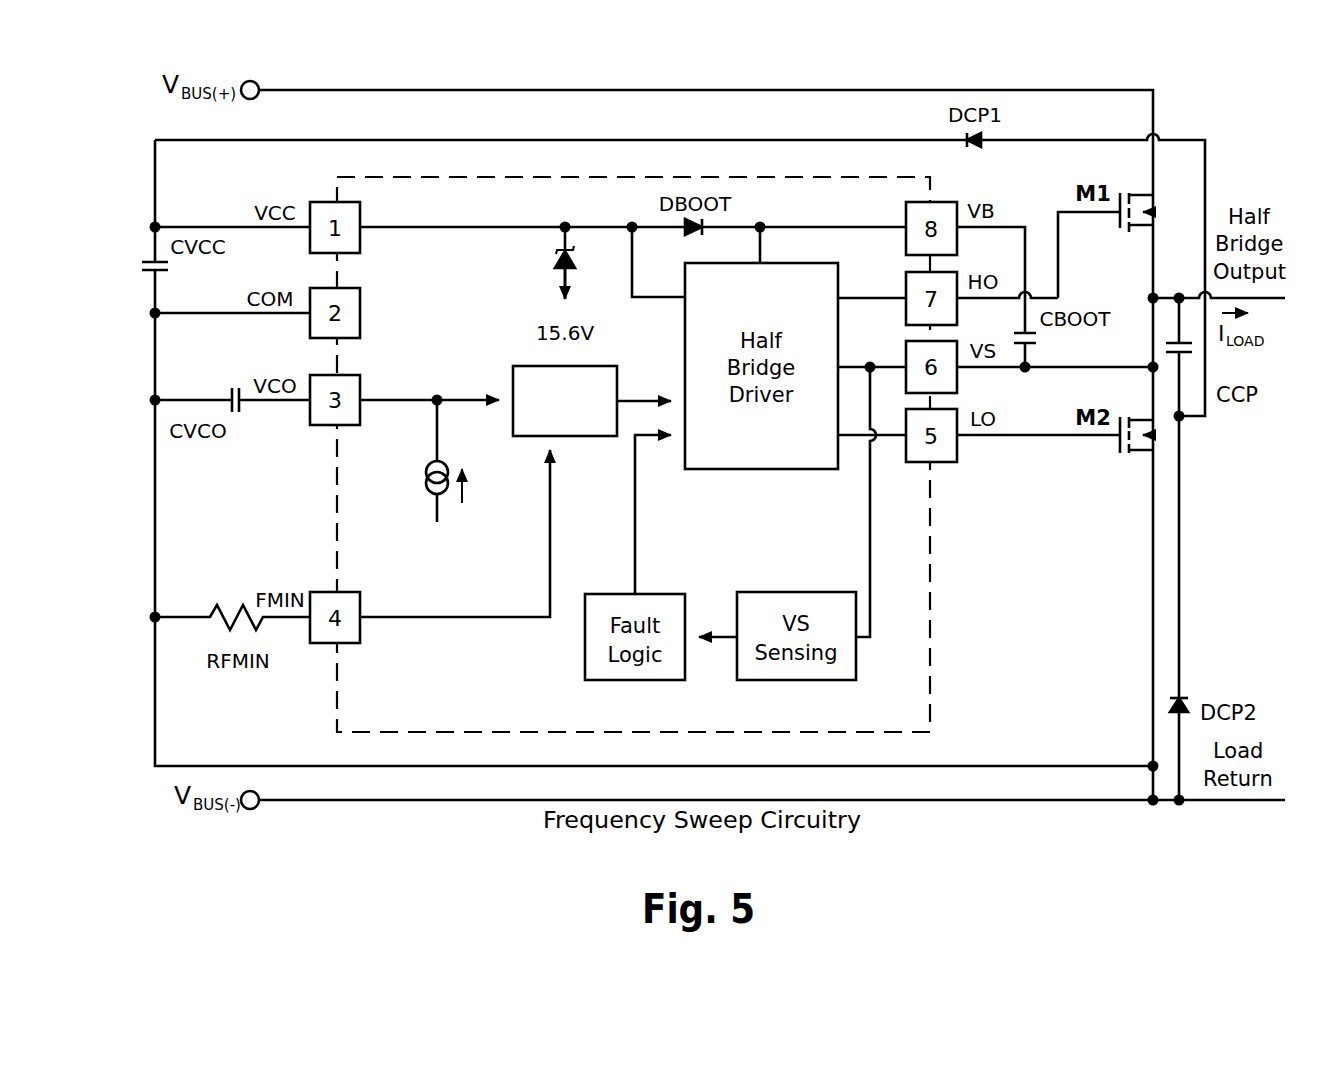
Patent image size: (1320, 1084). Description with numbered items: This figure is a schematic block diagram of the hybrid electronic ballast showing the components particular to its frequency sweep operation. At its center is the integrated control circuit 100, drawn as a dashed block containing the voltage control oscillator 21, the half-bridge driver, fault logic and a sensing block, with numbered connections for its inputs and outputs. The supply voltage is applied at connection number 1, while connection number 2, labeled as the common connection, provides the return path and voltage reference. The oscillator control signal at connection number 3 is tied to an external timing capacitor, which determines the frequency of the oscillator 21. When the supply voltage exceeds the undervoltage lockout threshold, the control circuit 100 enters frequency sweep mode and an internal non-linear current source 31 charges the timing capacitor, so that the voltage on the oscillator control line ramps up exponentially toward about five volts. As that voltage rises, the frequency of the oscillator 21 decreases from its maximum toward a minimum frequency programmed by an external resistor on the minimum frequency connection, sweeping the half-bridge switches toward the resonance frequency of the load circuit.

The connection number 1 is at (250, 76).
The connection number 2 is at (1219, 287).
The connection number 3 is at (763, 816).
The voltage control oscillator (VCO) 21 is at (590, 438).
The internal current source 31 is at (426, 481).
The integrated control circuit 100 is at (335, 706).